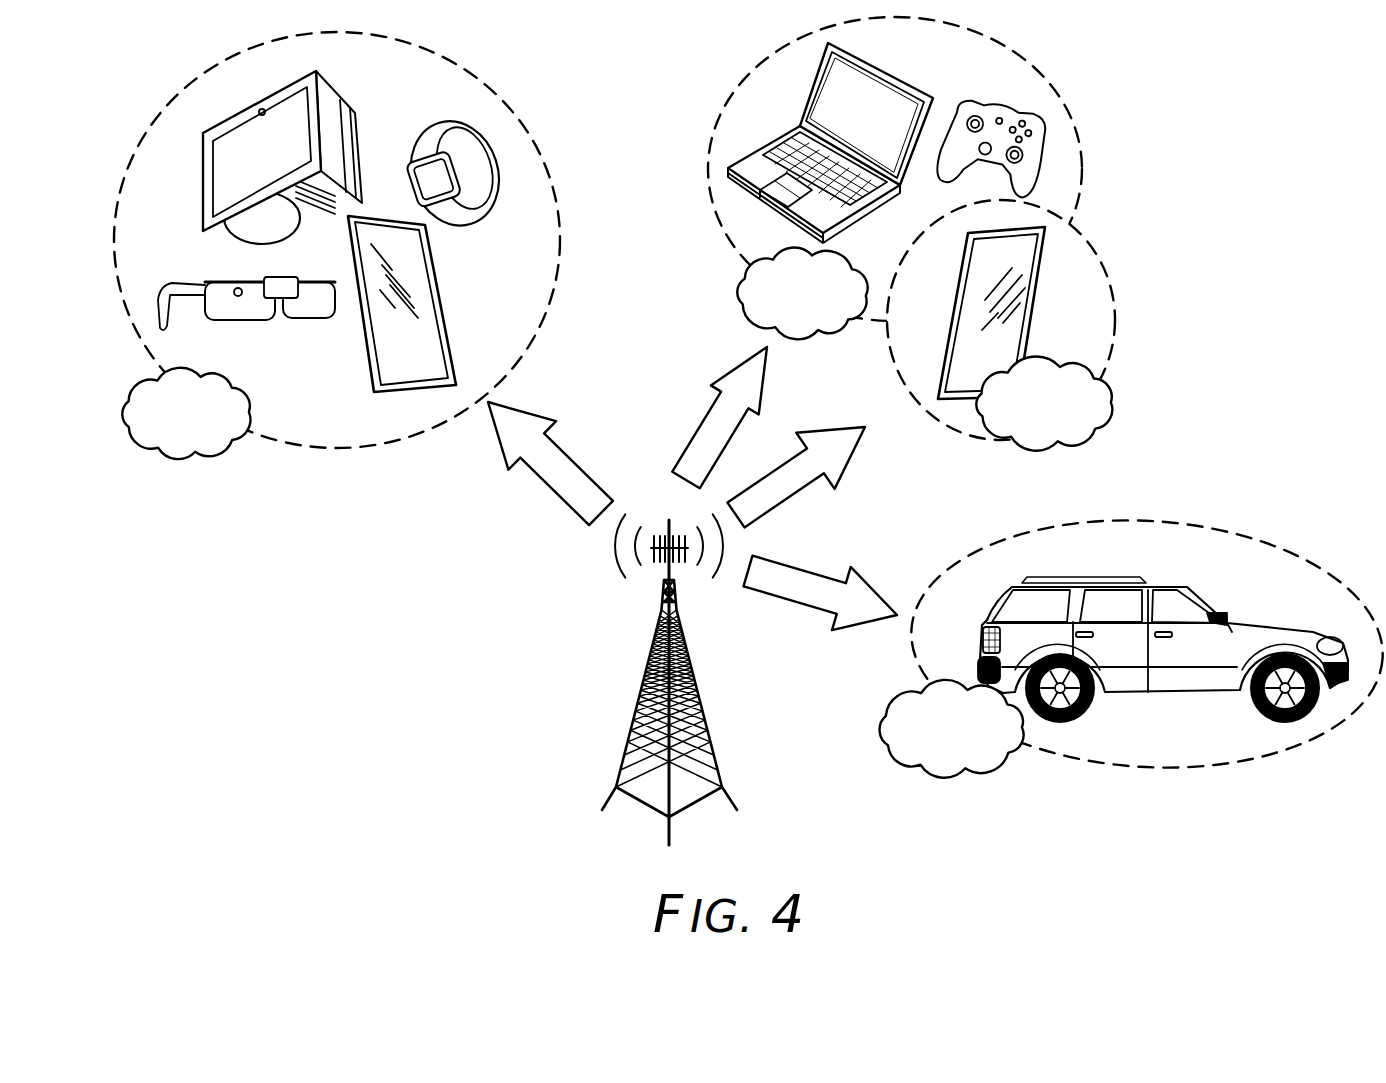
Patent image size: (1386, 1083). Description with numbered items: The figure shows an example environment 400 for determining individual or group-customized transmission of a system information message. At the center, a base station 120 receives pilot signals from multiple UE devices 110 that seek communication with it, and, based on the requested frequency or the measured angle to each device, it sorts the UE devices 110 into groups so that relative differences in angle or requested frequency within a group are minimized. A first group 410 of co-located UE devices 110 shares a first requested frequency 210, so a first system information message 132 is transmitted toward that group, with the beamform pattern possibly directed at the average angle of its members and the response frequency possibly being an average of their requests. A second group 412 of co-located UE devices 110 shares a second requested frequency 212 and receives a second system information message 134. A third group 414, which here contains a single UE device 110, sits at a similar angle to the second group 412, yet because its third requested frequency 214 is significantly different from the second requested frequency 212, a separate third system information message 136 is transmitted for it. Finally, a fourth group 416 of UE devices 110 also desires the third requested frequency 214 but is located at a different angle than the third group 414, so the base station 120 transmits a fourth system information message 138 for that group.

The UE devices 110 is at (164, 168).
The base station 120 is at (656, 672).
The first system information message 132 is at (550, 486).
The second system information message 134 is at (703, 420).
The third system information message 136 is at (800, 495).
The fourth system information message 138 is at (812, 612).
The first requested frequency 210 is at (186, 413).
The second requested frequency 212 is at (802, 294).
The third requested frequency 214 is at (996, 567).
The environment 400 is at (272, 832).
The first group 410 is at (300, 452).
The second group 412 is at (742, 86).
The third group 414 is at (1090, 250).
The fourth group 416 is at (1150, 525).